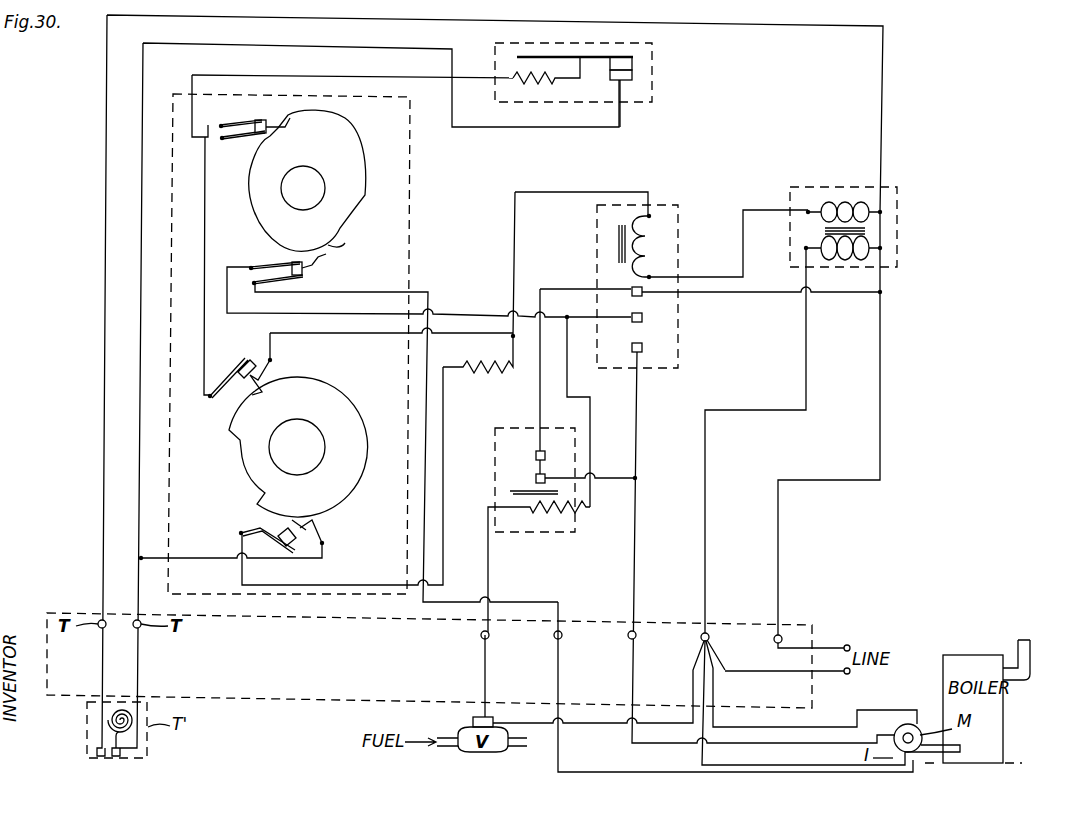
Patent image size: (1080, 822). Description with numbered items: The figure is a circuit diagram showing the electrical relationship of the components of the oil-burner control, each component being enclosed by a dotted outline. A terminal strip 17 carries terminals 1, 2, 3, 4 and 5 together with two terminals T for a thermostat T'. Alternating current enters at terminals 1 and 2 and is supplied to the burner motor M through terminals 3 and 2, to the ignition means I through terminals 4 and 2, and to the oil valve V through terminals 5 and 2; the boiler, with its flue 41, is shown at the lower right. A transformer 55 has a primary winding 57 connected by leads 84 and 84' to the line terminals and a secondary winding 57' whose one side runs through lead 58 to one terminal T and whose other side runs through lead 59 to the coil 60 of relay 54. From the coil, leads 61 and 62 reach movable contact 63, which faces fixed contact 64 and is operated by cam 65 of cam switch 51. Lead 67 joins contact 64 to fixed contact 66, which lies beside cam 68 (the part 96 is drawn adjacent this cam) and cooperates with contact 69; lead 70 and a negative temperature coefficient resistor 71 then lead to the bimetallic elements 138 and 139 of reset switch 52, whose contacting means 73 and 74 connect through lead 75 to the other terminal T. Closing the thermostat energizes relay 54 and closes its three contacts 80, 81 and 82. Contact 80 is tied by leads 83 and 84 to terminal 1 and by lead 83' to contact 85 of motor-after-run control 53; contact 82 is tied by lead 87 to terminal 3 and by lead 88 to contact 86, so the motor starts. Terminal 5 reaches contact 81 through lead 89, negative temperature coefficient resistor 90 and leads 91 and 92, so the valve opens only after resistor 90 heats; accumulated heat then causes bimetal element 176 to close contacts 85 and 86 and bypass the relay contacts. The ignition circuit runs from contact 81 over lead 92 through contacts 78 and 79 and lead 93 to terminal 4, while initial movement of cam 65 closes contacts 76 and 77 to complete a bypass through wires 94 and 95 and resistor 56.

The terminal 1 is at (770, 639).
The terminal 2 is at (694, 635).
The terminal 3 is at (621, 635).
The terminal 4 is at (548, 635).
The terminal 5 is at (472, 635).
The terminal strip 17 is at (302, 689).
The flue 41 is at (1030, 652).
The cam switch 51 is at (410, 224).
The reset switch 52 is at (603, 61).
The motor-after-run control 53 is at (490, 430).
The relay 54 is at (668, 202).
The transformer 55 is at (897, 228).
The resistor 56 is at (480, 376).
The primary winding 57 is at (843, 262).
The secondary winding 57' is at (844, 197).
The lead 58 is at (776, 27).
The lead 59 is at (743, 245).
The coil 60 is at (650, 232).
The lead 61 is at (575, 190).
The lead 62 is at (484, 336).
The movable contact 63 is at (259, 346).
The fixed contact 64 is at (242, 374).
The cam 65 is at (309, 406).
The fixed contact 66 is at (268, 118).
The lead 67 is at (205, 206).
The cam 68 is at (330, 149).
The contact 69 is at (258, 133).
The lead 70 is at (338, 80).
The negative temperature coefficient resistor 71 is at (534, 88).
The contacting means 73 is at (633, 62).
The contacting means 74 is at (633, 78).
The lead 75 is at (543, 128).
The contact 76 is at (306, 520).
The contact 77 is at (268, 528).
The contact 78 is at (294, 262).
The contact 79 is at (310, 277).
The relay contact 80 is at (645, 293).
The relay contact 81 is at (645, 318).
The relay contact 82 is at (645, 348).
The lead 83 is at (762, 305).
The lead 83' is at (585, 366).
The lead 84 is at (848, 425).
The lead 84' is at (771, 442).
The contact 85 is at (528, 462).
The contact 86 is at (526, 478).
The lead 87 is at (637, 424).
The lead 88 is at (606, 475).
The lead 89 is at (488, 578).
The negative temperature coefficient resistor 90 is at (530, 520).
The lead 91 is at (590, 420).
The lead 92 is at (582, 314).
The lead 93 is at (425, 520).
The wire 94 is at (212, 548).
The wire 95 is at (367, 574).
The cam follower 96 is at (348, 248).
The bimetallic element 138 is at (519, 31).
The bimetallic element 139 is at (559, 31).
The bimetal element 176 is at (510, 490).